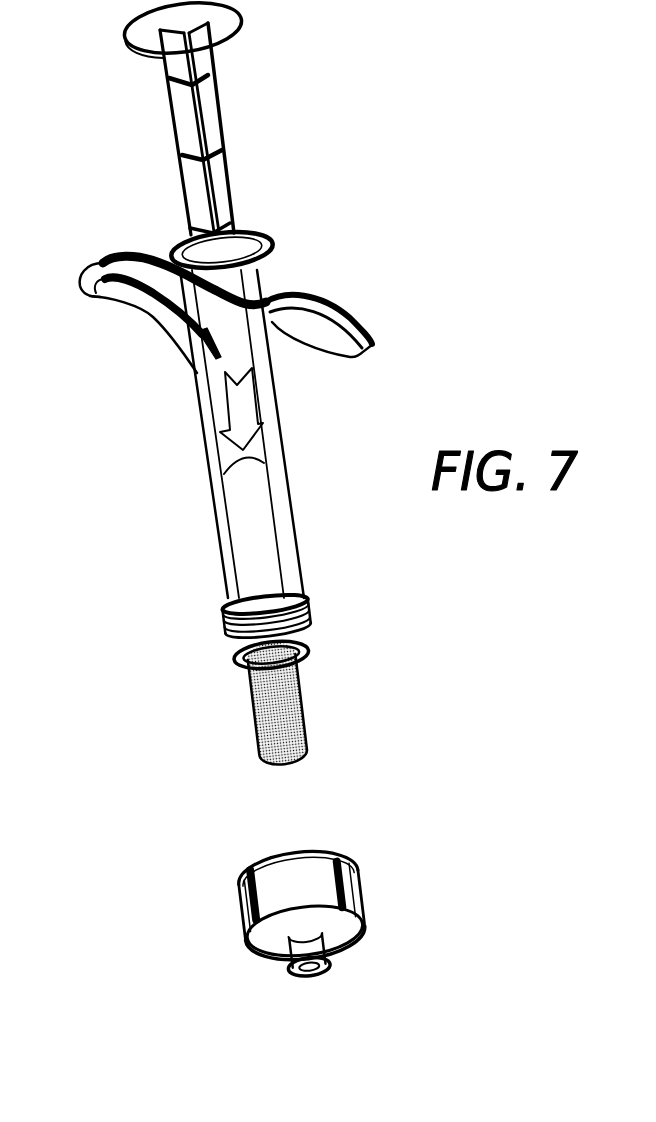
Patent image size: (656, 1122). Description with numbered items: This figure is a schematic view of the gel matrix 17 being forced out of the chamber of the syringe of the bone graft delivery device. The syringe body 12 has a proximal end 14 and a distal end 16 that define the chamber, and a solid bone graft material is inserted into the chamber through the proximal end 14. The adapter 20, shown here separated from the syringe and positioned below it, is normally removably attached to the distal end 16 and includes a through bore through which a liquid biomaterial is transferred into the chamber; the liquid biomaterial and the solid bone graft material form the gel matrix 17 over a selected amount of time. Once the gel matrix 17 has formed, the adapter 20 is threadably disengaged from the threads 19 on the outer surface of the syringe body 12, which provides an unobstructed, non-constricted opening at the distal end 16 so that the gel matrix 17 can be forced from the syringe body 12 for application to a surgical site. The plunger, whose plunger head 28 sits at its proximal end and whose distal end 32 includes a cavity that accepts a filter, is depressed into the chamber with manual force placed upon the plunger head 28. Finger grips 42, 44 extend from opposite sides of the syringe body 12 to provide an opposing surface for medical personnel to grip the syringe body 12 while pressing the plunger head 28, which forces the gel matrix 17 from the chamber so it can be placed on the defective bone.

The syringe body 12 is at (206, 467).
The proximal end 14 is at (268, 243).
The distal end 16 is at (310, 640).
The gel matrix 17 is at (258, 716).
The threads 19 is at (308, 610).
The adapter 20 is at (358, 898).
The plunger head 28 is at (223, 125).
The distal end of the plunger 32 is at (262, 465).
The finger grip 42 is at (76, 287).
The finger grip 44 is at (360, 361).